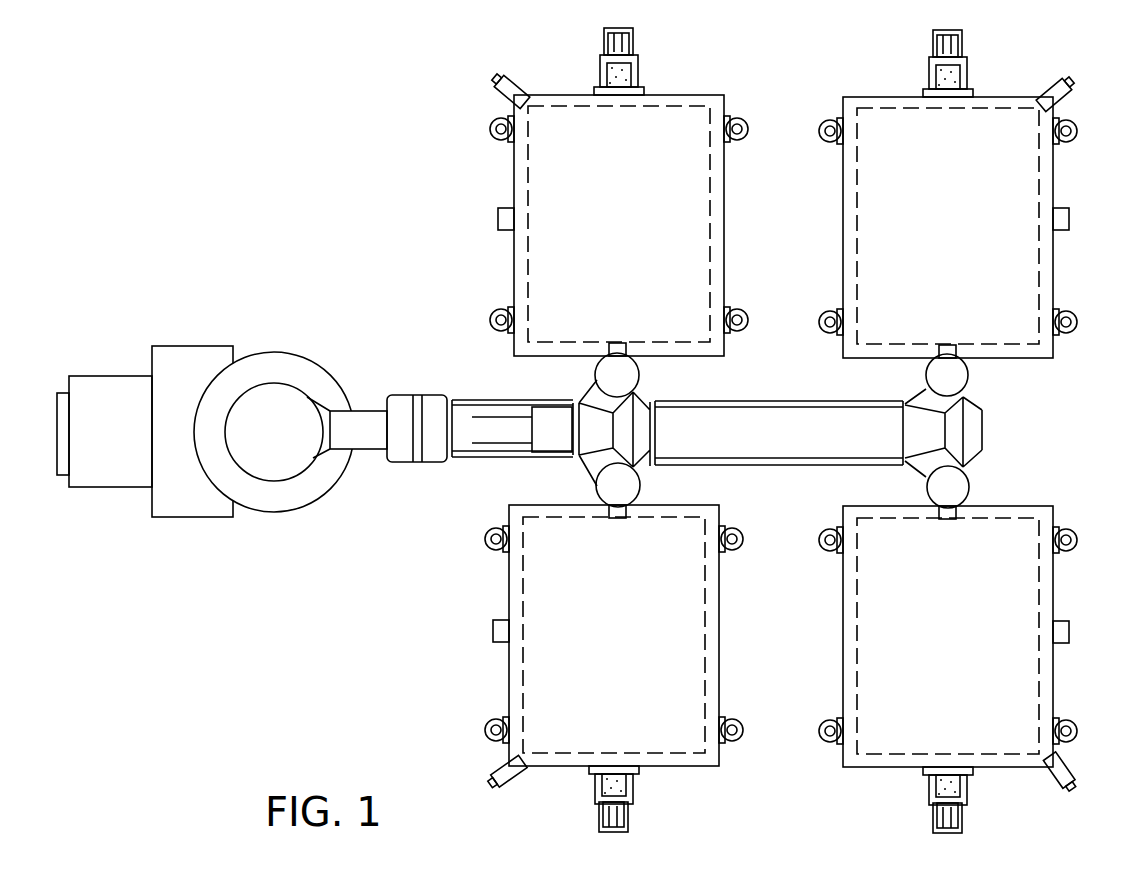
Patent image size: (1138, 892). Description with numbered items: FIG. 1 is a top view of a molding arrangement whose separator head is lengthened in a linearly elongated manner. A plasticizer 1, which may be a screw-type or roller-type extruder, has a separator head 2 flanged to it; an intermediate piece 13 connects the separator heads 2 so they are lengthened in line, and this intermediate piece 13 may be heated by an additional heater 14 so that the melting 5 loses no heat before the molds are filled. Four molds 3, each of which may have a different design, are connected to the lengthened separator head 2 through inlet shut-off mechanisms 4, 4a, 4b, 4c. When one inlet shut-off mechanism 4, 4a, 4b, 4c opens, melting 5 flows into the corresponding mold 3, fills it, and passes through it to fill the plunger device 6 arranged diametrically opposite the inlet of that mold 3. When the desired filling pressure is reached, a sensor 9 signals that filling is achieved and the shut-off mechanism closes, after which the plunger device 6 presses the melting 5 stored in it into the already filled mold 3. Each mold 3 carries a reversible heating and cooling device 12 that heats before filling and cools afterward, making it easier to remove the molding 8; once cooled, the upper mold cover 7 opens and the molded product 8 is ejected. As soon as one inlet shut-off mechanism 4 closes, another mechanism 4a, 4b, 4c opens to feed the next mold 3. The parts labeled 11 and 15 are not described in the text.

The plasticizer 1 is at (345, 436).
The separator head 2 is at (943, 435).
The mold 3 is at (777, 434).
The inlet shut-off mechanism 4 is at (606, 376).
The inlet shut-off mechanism 4a is at (606, 483).
The inlet shut-off mechanism 4b is at (958, 487).
The inlet shut-off mechanism 4c is at (963, 378).
The melting 5 is at (605, 76).
The plunger device 6 is at (647, 50).
The upper mold cover 7 is at (693, 120).
The molding 8 is at (528, 276).
The sensor 9 is at (493, 78).
The shaft coupling 11 is at (447, 427).
The heating and cooling device 12 is at (491, 207).
The intermediate piece 13 is at (779, 424).
The additional heater 14 is at (765, 398).
The strut 15 is at (923, 396).